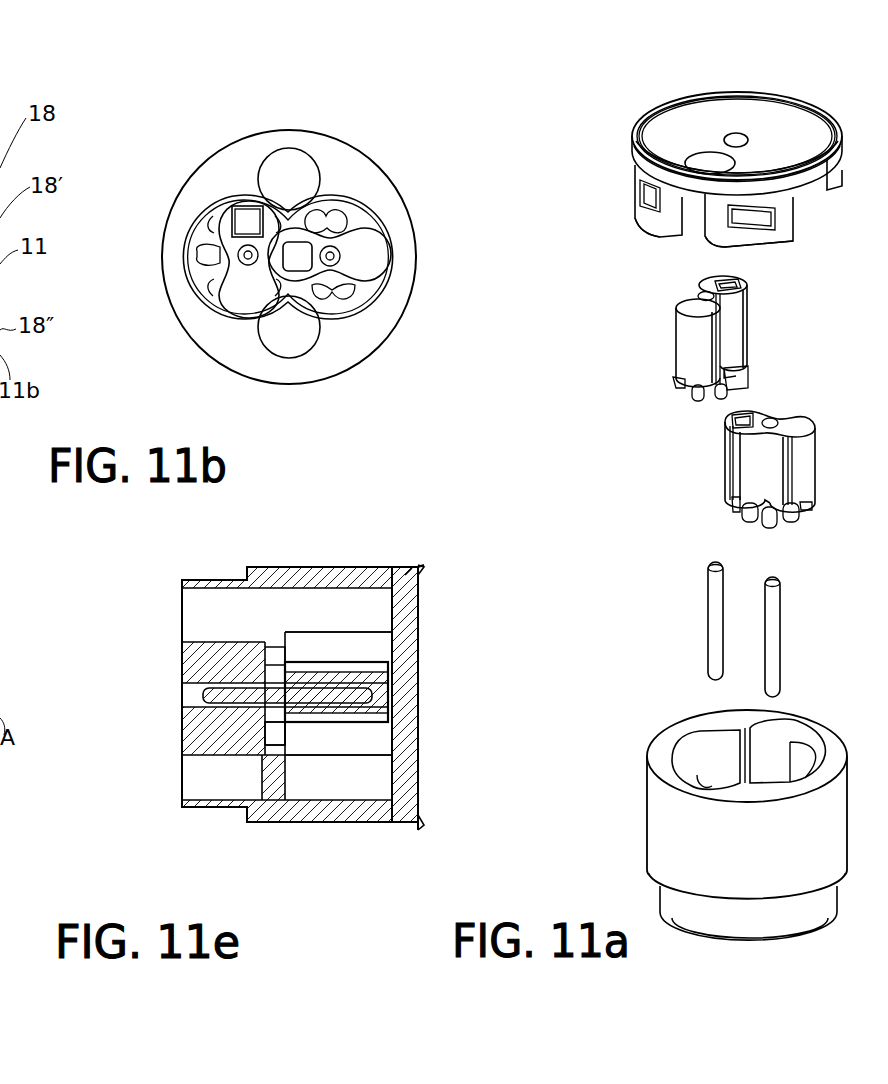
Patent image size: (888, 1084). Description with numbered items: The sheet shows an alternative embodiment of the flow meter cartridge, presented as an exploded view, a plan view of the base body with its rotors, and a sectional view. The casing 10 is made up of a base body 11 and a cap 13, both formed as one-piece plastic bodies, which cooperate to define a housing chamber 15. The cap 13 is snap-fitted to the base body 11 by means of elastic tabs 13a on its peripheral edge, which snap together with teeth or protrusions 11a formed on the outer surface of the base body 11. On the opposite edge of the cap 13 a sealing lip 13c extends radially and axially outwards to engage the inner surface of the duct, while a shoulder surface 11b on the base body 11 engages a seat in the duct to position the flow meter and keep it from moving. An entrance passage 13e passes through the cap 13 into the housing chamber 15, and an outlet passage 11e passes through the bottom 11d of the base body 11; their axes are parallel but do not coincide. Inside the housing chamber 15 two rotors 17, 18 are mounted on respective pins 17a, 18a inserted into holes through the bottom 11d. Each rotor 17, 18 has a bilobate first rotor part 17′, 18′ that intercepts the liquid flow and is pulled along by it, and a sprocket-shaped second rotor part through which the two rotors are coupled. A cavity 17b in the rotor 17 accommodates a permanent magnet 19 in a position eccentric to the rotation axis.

In FIG. 11e, the casing 10 is at (255, 561).
In FIG. 11b, the base body 11 is at (161, 274).
In FIG. 11e, the base body 11 is at (314, 561).
In FIG. 11a, the base body 11 is at (646, 808).
In FIG. 11a, the teeth or protrusions 11a is at (640, 193).
In FIG. 11e, the shoulder surface 11b is at (245, 573).
In FIG. 11a, the shoulder surface 11b is at (656, 881).
In FIG. 11e, the bottom 11d is at (196, 740).
In FIG. 11b, the outlet passage 11e is at (306, 173).
In FIG. 11e, the outlet passage 11e is at (207, 615).
In FIG. 11e, the cap 13 is at (421, 672).
In FIG. 11a, the cap 13 is at (627, 137).
In FIG. 11a, the elastic tabs 13a is at (715, 230).
In FIG. 11e, the sealing lip 13c is at (414, 566).
In FIG. 11a, the sealing lip 13c is at (648, 115).
In FIG. 11e, the entrance passage 13e is at (412, 778).
In FIG. 11a, the entrance passage 13e is at (712, 160).
In FIG. 11b, the housing chamber 15 is at (299, 323).
In FIG. 11e, the housing chamber 15 is at (368, 784).
In FIG. 11a, the housing chamber 15 is at (693, 751).
In FIG. 11b, the rotor 17 is at (216, 204).
In FIG. 11e, the rotor 17 is at (336, 724).
In FIG. 11a, the rotor 17 is at (669, 339).
In FIG. 11b, the first rotor part 17′ is at (232, 318).
In FIG. 11e, the first rotor part 17′ is at (352, 632).
In FIG. 11a, the first rotor part 17′ is at (747, 320).
In FIG. 11e, the pin 17a is at (222, 694).
In FIG. 11a, the pin 17a is at (712, 590).
In FIG. 11a, the cavity 17b is at (737, 279).
In FIG. 11b, the rotor 18 is at (393, 251).
In FIG. 11a, the rotor 18 is at (813, 458).
In FIG. 11b, the first rotor part 18′ is at (382, 267).
In FIG. 11a, the first rotor part 18′ is at (722, 462).
In FIG. 11a, the pin 18a is at (773, 648).
In FIG. 11b, the permanent magnet 19 is at (247, 212).